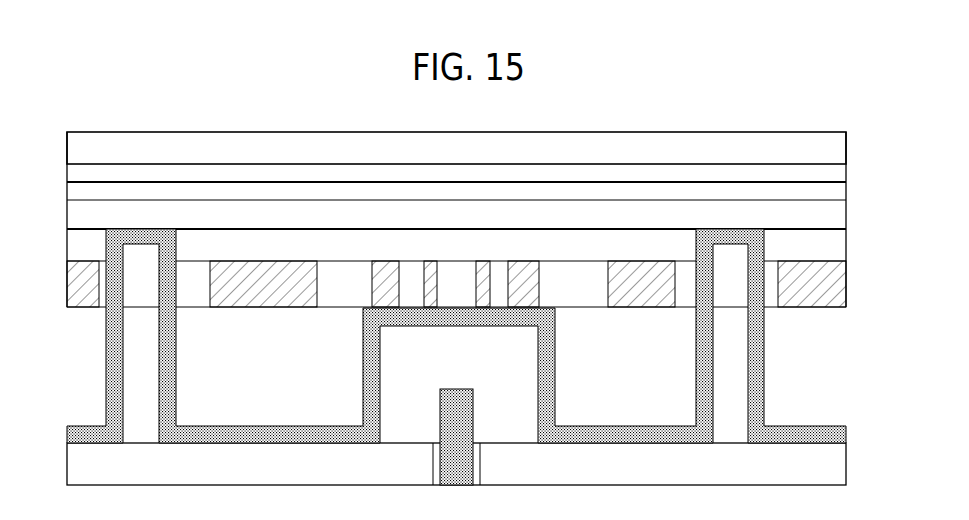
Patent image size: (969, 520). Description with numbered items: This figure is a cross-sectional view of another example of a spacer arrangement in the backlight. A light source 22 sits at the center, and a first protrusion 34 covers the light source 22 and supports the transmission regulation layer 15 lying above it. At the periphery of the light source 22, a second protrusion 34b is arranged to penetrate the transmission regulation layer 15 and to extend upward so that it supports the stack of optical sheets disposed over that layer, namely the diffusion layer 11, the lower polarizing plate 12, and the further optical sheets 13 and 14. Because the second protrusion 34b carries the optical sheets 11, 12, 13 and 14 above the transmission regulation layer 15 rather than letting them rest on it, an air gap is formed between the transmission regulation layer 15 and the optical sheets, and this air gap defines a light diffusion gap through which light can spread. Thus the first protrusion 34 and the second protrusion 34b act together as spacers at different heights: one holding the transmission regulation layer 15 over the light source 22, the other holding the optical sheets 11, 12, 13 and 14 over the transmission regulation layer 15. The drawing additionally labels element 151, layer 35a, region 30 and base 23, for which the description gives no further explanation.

The optical sheet 14 is at (838, 143).
The optical sheet 13 is at (838, 171).
The lower polarizing plate 12 is at (838, 191).
The diffusion layer 11 is at (838, 215).
The transmission regulation layer 15 is at (838, 282).
The cavity / support structure 151 is at (152, 283).
The second protrusion 34b is at (88, 377).
The first protrusion 34 is at (344, 377).
The light source 22 is at (453, 392).
The bottom film layer 35a is at (628, 432).
The intermediate structure 30 is at (855, 312).
The lower substrate 23 is at (838, 463).